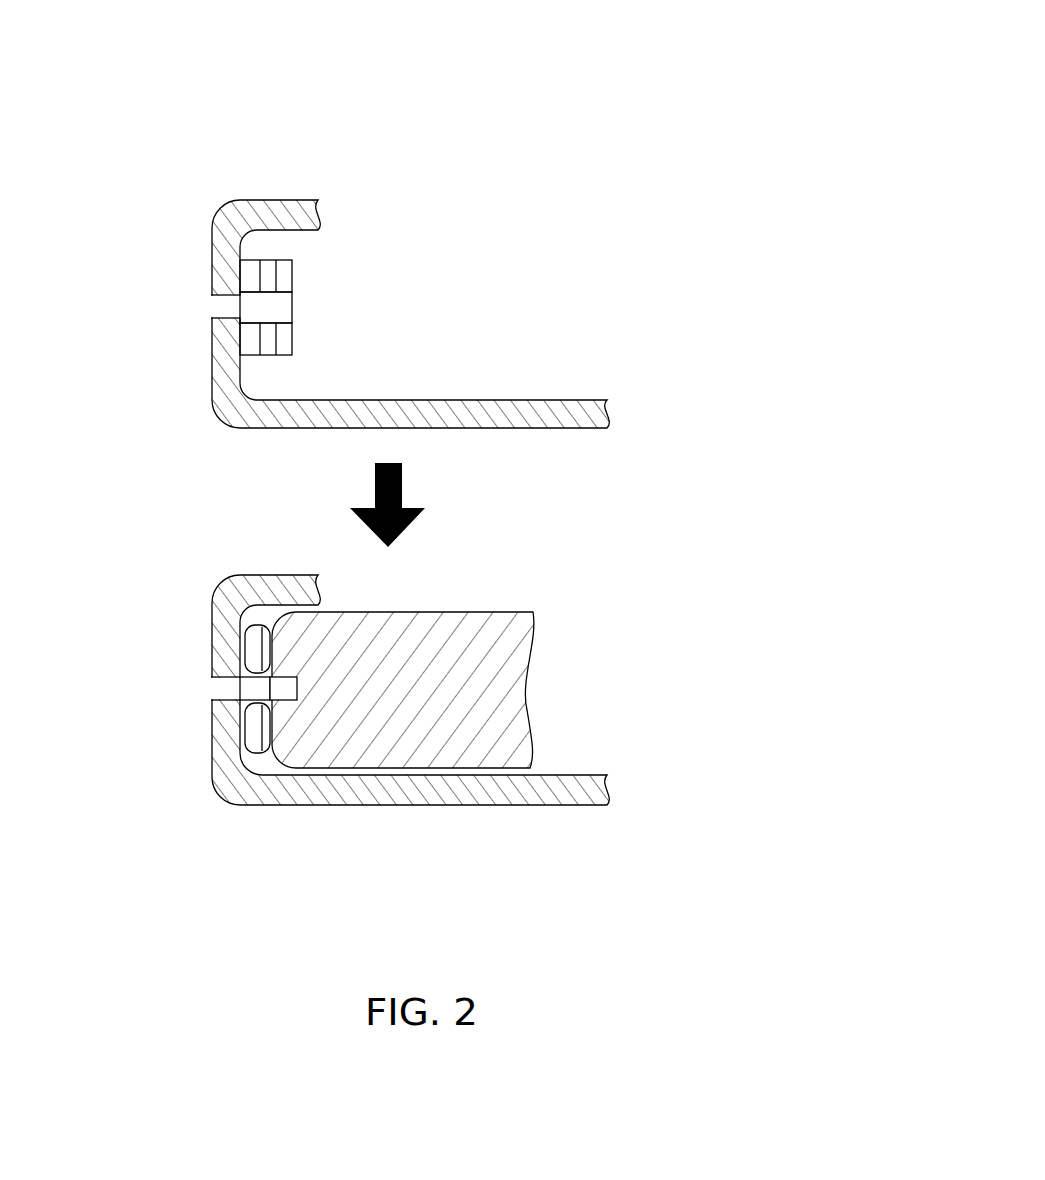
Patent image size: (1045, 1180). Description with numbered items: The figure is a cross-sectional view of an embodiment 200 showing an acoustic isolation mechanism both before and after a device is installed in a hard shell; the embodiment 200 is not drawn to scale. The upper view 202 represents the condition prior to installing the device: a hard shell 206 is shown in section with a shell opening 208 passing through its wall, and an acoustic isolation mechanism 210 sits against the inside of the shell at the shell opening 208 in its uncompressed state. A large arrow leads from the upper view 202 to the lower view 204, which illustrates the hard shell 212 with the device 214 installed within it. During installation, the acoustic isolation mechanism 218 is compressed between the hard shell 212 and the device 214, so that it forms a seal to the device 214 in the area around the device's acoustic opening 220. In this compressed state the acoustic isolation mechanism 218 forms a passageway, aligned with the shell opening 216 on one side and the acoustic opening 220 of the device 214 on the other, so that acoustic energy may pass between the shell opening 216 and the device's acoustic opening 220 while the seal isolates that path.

The embodiment 200 is at (450, 150).
The view 202 is at (690, 173).
The view 204 is at (657, 560).
The hard shell 206 is at (608, 412).
The shell opening 208 is at (212, 306).
The acoustic isolation mechanism 210 is at (292, 337).
The hard shell 212 is at (608, 790).
The device 214 is at (534, 640).
The shell opening 216 is at (212, 689).
The acoustic isolation mechanism in compressed state 218 is at (262, 753).
The acoustic opening 220 is at (298, 690).